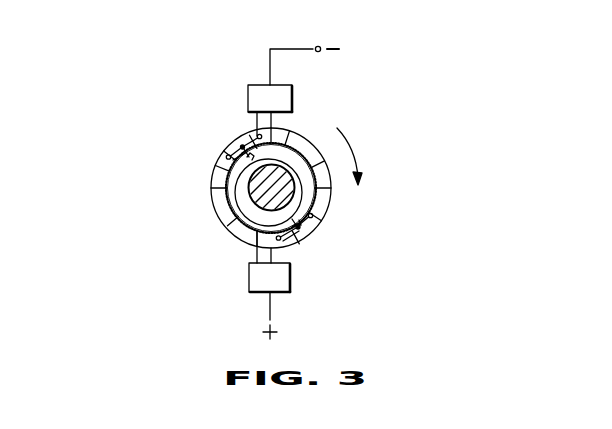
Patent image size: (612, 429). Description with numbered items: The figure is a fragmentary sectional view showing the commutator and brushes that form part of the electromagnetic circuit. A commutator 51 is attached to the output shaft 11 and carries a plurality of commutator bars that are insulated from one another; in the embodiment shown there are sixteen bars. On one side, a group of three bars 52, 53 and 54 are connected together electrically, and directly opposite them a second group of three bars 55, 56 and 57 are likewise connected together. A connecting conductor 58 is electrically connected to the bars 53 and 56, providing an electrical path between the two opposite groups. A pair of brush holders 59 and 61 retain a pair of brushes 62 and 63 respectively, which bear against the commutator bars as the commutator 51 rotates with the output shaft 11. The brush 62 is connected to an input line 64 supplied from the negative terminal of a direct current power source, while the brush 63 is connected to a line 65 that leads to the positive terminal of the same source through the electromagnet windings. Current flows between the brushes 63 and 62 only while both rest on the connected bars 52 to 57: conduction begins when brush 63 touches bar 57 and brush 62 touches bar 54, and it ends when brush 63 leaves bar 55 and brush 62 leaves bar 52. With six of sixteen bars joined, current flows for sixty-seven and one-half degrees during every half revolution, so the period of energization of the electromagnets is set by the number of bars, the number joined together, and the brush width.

The output shaft 11 is at (261, 194).
The commutator 51 is at (176, 196).
The commutator bar 52 is at (224, 157).
The commutator bar 53 is at (231, 153).
The commutator bar 54 is at (257, 133).
The commutator bar 55 is at (320, 217).
The commutator bar 56 is at (316, 235).
The commutator bar 57 is at (290, 241).
The connecting conductor 58 is at (279, 161).
The brush holder 59 is at (256, 85).
The brush holder 61 is at (258, 278).
The brush 62 is at (277, 119).
The brush 63 is at (277, 256).
The input line 64 is at (296, 46).
The line 65 is at (271, 307).